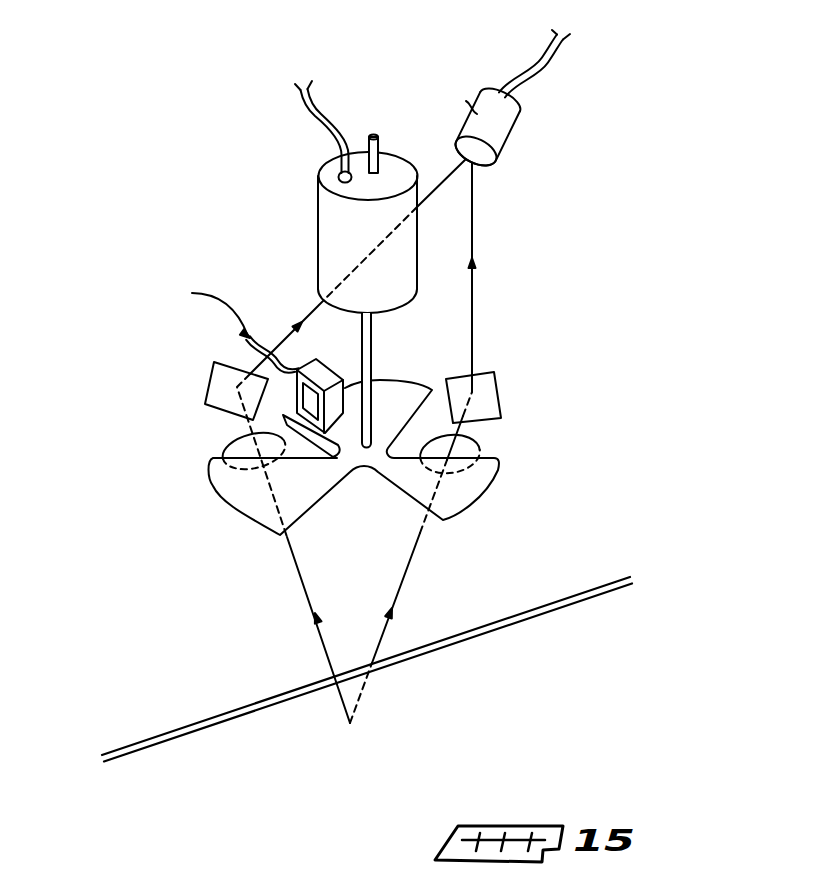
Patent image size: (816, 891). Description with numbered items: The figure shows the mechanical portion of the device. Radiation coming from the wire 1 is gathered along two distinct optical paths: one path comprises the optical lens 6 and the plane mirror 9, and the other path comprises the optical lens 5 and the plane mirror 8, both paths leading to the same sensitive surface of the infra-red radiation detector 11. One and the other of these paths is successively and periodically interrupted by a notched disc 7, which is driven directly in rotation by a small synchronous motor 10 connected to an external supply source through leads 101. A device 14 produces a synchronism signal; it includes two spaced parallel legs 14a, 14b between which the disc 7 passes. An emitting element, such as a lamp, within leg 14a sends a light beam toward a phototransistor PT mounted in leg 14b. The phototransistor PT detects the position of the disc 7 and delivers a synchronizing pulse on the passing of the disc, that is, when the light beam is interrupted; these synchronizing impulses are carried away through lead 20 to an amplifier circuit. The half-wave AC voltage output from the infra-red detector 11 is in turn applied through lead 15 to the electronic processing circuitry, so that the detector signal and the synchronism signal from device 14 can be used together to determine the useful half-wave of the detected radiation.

The wire 1 is at (213, 722).
The lens 5 is at (223, 452).
The lens 6 is at (481, 437).
The notched disc 7 is at (398, 388).
The plane mirror 8 is at (220, 366).
The plane mirror 9 is at (489, 376).
The synchronous motor 10 is at (321, 214).
The infra-red detector 11 is at (516, 120).
The synchronism signal device 14 is at (322, 362).
The leg 14a is at (343, 372).
The leg 14b is at (322, 440).
The lead 15 is at (550, 45).
The lead 20 is at (256, 342).
The leads 101 is at (320, 108).
The phototransistor PT is at (343, 437).